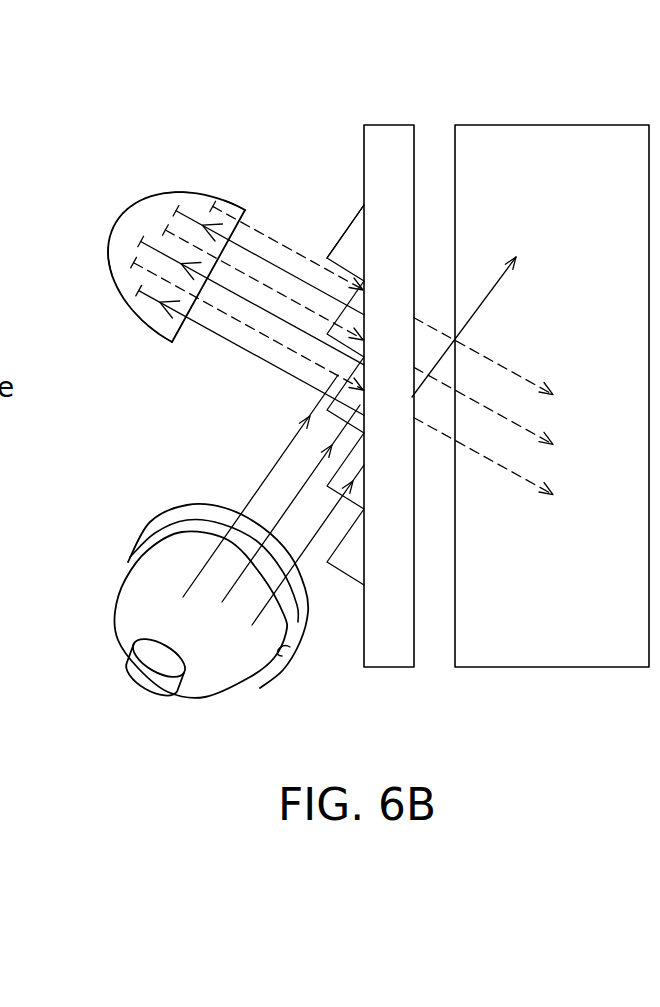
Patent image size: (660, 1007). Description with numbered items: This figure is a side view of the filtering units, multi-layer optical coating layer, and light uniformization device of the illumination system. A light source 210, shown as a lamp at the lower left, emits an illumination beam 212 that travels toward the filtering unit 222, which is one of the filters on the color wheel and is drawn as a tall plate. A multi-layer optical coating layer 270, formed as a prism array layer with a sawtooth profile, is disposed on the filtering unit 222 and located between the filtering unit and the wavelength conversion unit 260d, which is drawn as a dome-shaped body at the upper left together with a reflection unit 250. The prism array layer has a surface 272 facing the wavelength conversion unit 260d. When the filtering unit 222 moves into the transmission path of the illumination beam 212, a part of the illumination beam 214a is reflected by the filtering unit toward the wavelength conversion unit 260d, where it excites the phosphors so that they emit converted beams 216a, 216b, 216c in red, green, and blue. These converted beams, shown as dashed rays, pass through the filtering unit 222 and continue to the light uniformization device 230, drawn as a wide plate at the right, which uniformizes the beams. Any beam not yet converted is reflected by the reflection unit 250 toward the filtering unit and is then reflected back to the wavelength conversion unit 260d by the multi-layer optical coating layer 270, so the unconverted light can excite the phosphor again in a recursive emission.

The light source 210 is at (211, 608).
The illumination beam 212 is at (260, 488).
The part of the illumination beam 214a is at (230, 347).
The converted beam in the first color 216a is at (227, 203).
The converted beam in the second color 216b is at (176, 205).
The converted beam in the third color 216c is at (125, 277).
The filtering unit 222 is at (392, 155).
The light uniformization device 230 is at (515, 160).
The reflection unit 250 is at (144, 234).
The wavelength conversion unit 260d is at (257, 218).
The multi-layer optical coating layer 270 is at (352, 572).
The surface 272 is at (347, 233).